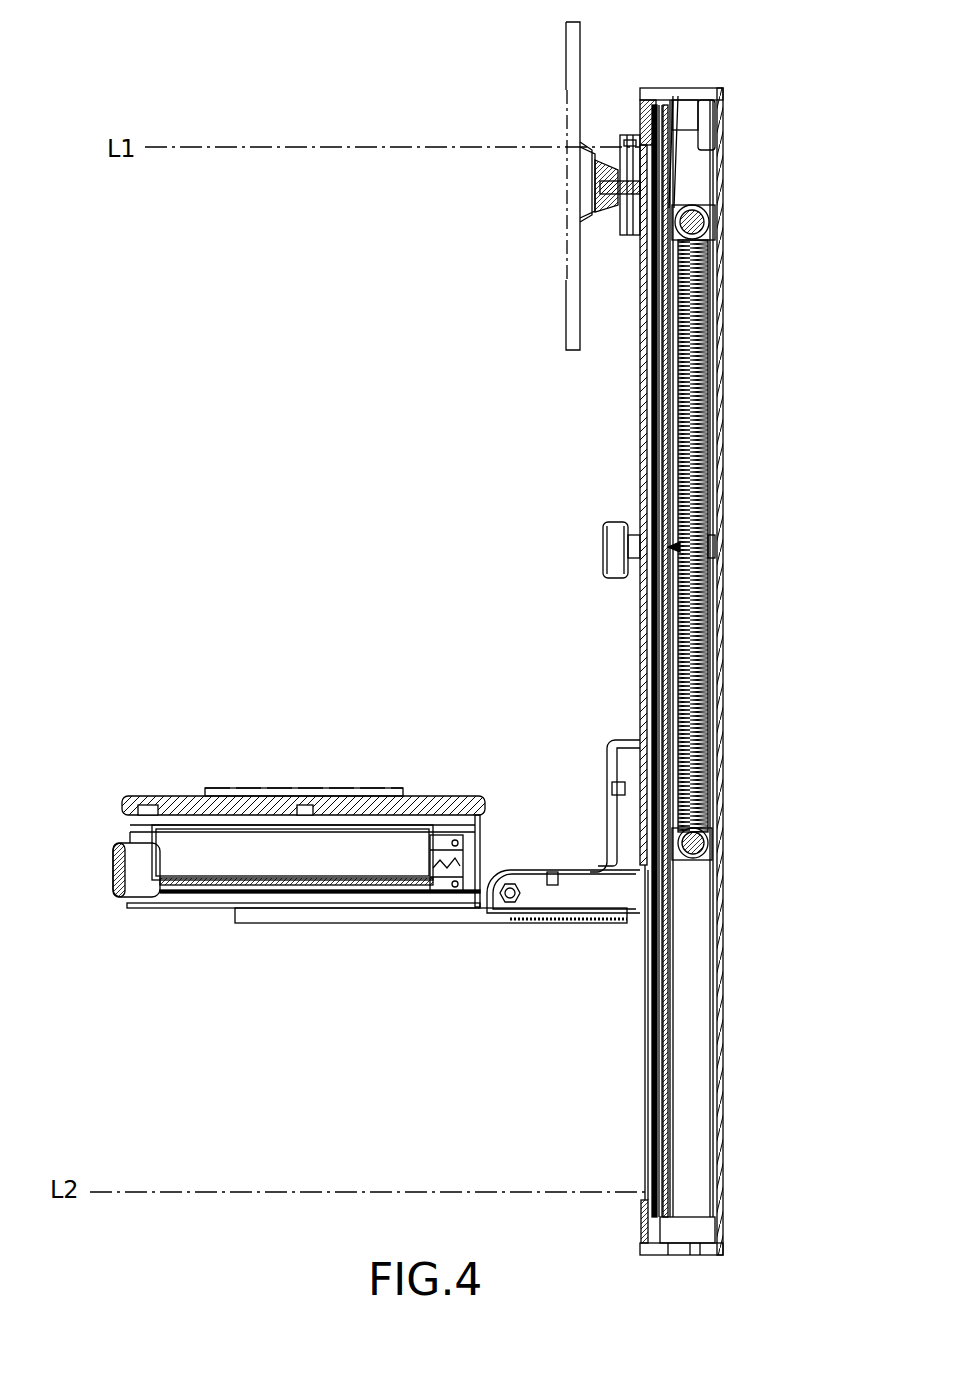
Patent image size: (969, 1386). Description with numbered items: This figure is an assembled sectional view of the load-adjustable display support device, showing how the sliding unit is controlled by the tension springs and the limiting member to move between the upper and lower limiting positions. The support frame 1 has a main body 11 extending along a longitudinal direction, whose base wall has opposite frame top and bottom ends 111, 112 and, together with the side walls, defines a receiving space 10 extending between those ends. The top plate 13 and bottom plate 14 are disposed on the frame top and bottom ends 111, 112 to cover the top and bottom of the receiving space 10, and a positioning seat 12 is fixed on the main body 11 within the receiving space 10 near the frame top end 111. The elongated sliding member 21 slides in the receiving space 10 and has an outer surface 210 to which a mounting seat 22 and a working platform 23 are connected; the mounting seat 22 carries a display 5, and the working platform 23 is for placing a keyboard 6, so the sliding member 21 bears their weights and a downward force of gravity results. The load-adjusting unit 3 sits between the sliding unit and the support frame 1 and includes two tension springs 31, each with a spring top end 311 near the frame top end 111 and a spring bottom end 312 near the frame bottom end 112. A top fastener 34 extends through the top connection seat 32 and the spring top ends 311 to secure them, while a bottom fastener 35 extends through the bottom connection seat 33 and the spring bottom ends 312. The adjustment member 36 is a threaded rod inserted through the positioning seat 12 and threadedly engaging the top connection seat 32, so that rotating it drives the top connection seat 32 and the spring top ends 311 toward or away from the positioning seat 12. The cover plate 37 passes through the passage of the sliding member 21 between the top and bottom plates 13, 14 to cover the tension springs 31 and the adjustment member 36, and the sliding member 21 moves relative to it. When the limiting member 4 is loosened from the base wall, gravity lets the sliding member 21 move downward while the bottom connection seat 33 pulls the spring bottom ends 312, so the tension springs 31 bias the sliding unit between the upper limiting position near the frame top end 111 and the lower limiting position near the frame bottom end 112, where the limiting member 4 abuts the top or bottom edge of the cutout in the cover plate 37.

The support frame 1 is at (644, 669).
The load-adjusting unit 3 is at (747, 507).
The limiting member 4 is at (595, 545).
The display 5 is at (552, 80).
The keyboard 6 is at (290, 783).
The receiving space 10 is at (724, 669).
The main body 11 is at (722, 590).
The positioning seat 12 is at (700, 97).
The top plate 13 is at (650, 92).
The bottom plate 14 is at (700, 1256).
The sliding member 21 is at (560, 661).
The outer surface 210 is at (643, 430).
The mounting seat 22 is at (578, 145).
The working platform 23 is at (130, 798).
The tension spring 31 is at (708, 742).
The top connection seat 32 is at (703, 215).
The bottom connection seat 33 is at (697, 858).
The top fastener 34 is at (710, 240).
The bottom fastener 35 is at (708, 850).
The adjustment member 36 is at (690, 185).
The cover plate 37 is at (660, 660).
The frame top end 111 is at (722, 100).
The frame bottom end 112 is at (722, 1250).
The spring top end 311 is at (705, 226).
The spring bottom end 312 is at (707, 840).